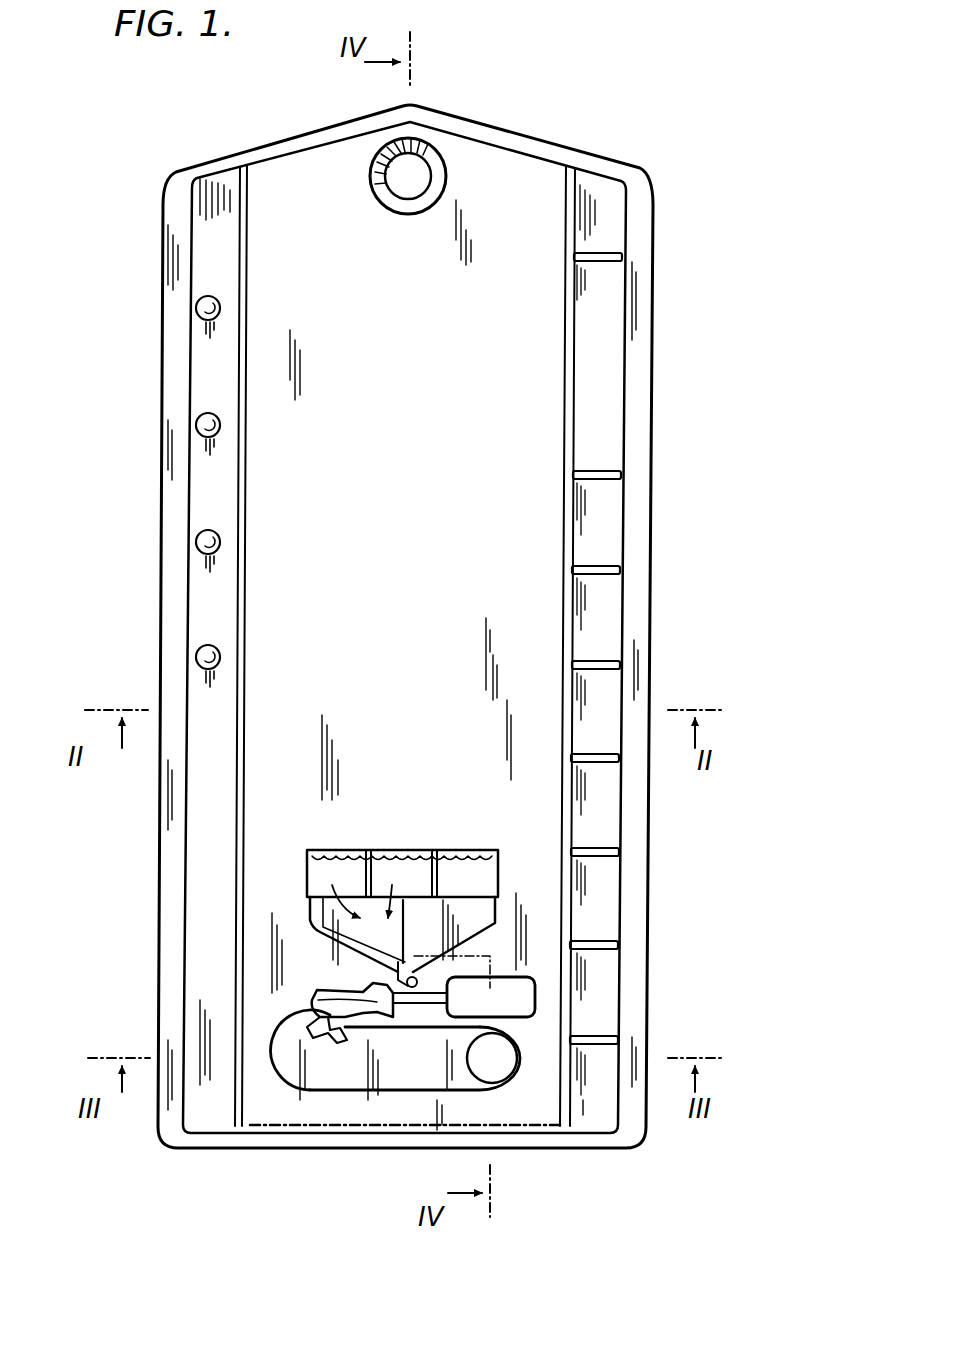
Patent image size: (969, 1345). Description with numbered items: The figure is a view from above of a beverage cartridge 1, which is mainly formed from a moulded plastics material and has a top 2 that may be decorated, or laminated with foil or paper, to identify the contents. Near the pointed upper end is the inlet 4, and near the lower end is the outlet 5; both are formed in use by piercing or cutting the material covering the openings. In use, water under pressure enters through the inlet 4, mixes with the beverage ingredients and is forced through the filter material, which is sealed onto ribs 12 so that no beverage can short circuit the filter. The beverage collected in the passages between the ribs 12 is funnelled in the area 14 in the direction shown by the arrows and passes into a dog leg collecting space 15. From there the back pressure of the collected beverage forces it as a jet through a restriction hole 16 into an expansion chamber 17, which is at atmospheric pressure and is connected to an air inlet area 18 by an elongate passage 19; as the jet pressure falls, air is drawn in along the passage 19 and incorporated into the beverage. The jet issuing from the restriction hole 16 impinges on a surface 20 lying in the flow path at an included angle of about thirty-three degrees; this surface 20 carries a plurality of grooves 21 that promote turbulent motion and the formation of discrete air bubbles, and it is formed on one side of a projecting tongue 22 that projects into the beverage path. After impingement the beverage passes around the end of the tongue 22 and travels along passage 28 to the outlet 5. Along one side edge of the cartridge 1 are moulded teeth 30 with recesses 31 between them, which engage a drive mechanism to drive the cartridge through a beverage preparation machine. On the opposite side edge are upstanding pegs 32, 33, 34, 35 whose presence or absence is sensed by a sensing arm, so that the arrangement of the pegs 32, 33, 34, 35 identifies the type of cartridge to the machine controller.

The cartridge 1 is at (104, 371).
The top 2 is at (490, 360).
The inlet 4 is at (418, 172).
The outlet 5 is at (500, 1067).
The ribs 12 is at (432, 866).
The area 14 is at (320, 912).
The dog leg collecting space 15 is at (407, 980).
The restriction hole 16 is at (397, 977).
The expansion chamber 17 is at (380, 993).
The air inlet area 18 is at (527, 993).
The elongate passage 19 is at (420, 1003).
The surface 20 is at (328, 1033).
The grooves 21 is at (320, 1015).
The projecting tongue 22 is at (370, 1030).
The passage 28 is at (455, 1077).
The teeth 30 is at (611, 477).
The recesses 31 is at (603, 614).
The peg 32 is at (196, 306).
The peg 33 is at (196, 426).
The peg 34 is at (196, 542).
The peg 35 is at (196, 657).